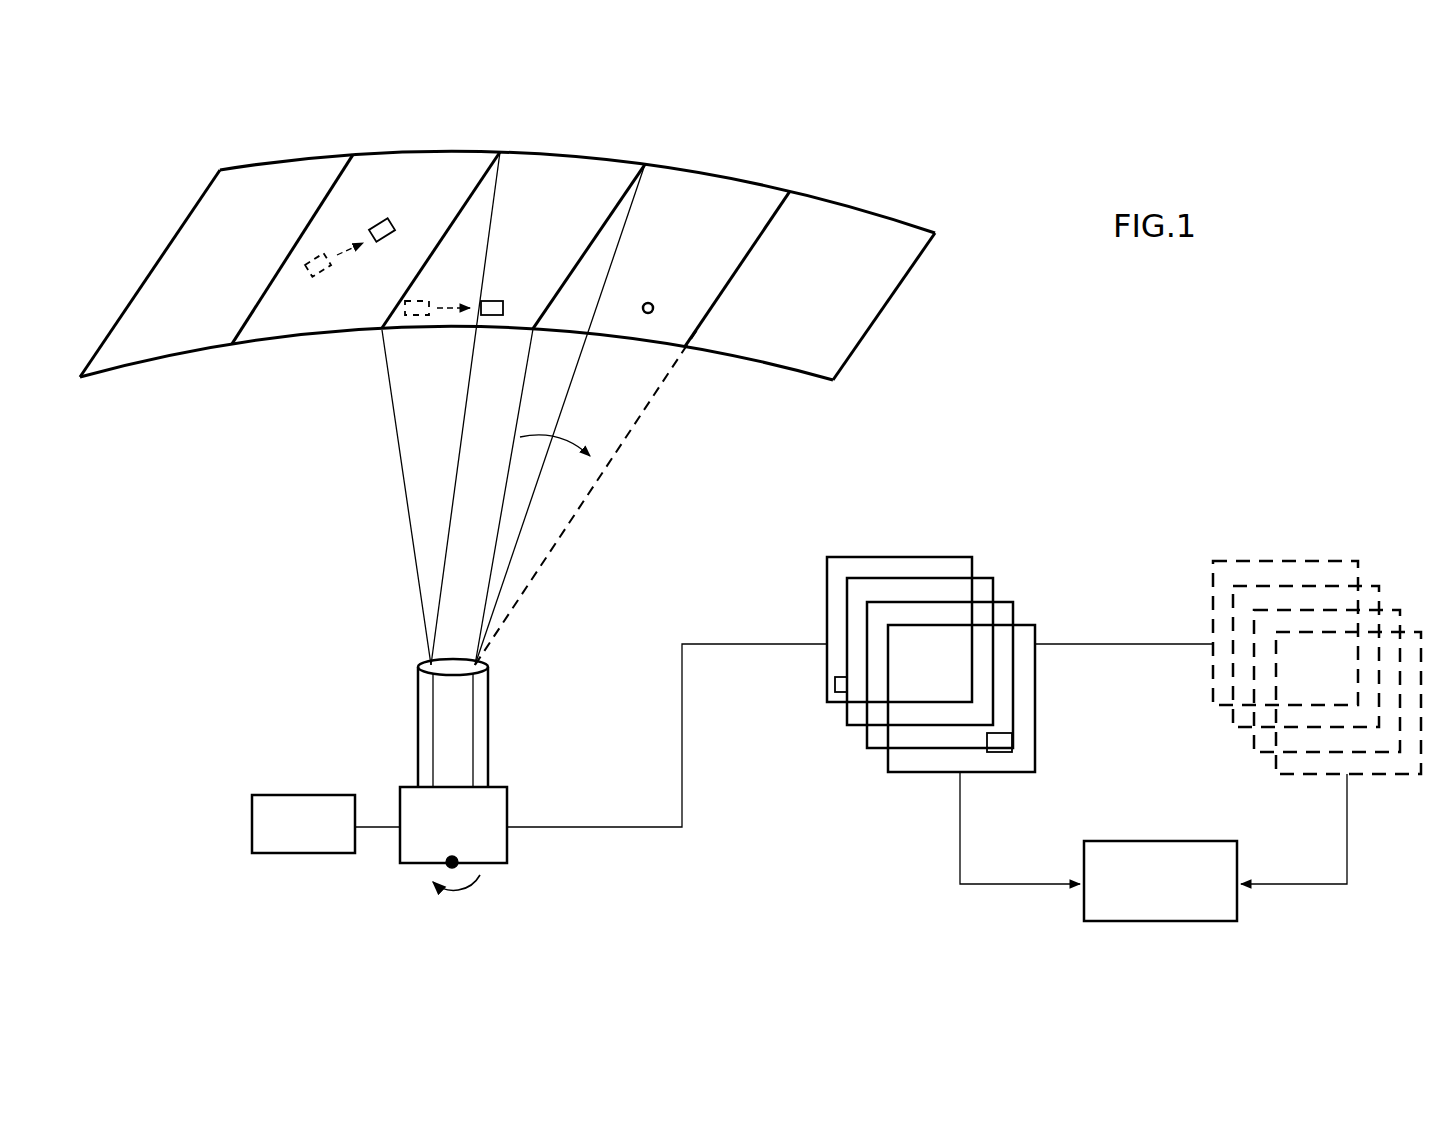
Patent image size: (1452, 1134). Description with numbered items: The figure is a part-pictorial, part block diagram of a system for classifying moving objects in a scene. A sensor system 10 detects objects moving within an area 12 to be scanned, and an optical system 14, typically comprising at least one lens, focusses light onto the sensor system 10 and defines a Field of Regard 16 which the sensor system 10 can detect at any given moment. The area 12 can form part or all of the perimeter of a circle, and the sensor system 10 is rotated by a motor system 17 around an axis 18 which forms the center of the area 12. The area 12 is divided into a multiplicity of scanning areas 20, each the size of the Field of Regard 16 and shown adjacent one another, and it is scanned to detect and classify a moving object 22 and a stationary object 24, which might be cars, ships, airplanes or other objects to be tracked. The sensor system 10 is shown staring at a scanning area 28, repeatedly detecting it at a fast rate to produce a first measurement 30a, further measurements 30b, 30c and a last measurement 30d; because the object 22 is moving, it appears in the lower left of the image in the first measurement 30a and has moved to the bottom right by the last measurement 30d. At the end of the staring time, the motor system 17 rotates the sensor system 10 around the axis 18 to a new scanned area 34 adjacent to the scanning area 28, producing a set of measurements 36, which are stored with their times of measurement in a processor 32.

The sensor system 10 is at (508, 810).
The area 12 is at (126, 233).
The optical system 14 is at (457, 672).
The Field of Regard 16 is at (447, 370).
The motor system 17 is at (333, 802).
The axis 18 is at (463, 888).
The scanning areas 20 is at (260, 163).
The moving object 22 is at (377, 217).
The stationary object 24 is at (655, 308).
The scanning area 28 is at (593, 197).
The first measurement 30a is at (935, 557).
The measurement 30b is at (985, 578).
The measurement 30c is at (1008, 602).
The last measurement 30d is at (1033, 625).
The processor 32 is at (1198, 921).
The scanned area 34 is at (717, 213).
The measurements 36 is at (1421, 632).